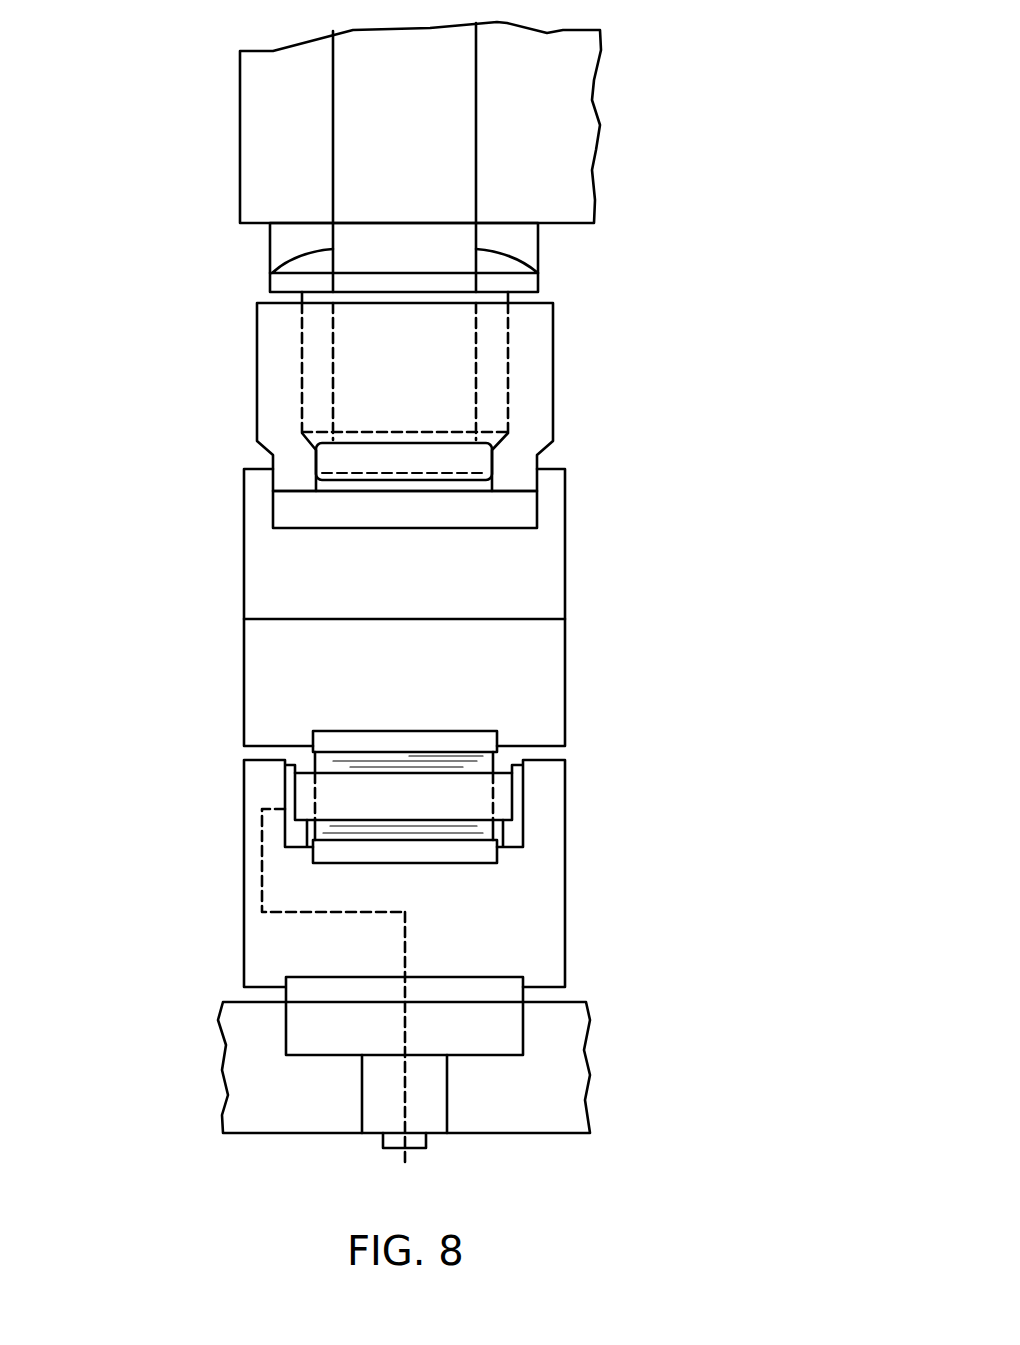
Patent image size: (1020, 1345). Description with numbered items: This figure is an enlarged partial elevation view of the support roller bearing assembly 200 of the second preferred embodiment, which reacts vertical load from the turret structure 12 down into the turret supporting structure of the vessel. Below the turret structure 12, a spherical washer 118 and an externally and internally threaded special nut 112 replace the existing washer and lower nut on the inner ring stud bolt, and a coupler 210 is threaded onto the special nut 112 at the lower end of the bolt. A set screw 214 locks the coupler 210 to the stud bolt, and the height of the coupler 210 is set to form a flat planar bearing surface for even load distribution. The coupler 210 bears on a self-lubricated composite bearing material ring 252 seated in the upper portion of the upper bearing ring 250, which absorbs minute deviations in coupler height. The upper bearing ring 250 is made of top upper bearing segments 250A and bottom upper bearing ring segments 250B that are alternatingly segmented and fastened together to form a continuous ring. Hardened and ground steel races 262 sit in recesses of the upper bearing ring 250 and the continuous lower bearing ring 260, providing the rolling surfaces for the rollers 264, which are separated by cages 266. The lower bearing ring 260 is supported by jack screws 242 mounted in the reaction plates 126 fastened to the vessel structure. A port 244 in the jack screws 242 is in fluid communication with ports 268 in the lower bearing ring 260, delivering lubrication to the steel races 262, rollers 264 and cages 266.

The turret structure 12 is at (563, 174).
The spherical washer 118 is at (528, 251).
The coupler 210 is at (535, 342).
The special nut 112 is at (490, 387).
The set screw 214 is at (480, 461).
The bearing material ring 252 is at (517, 510).
The upper bearing ring 250 is at (394, 607).
The top upper bearing segments 250A is at (267, 563).
The bottom upper bearing ring segments 250B is at (263, 683).
The steel races 262 is at (450, 742).
The rollers 264 is at (325, 763).
The cages 266 is at (505, 794).
The ports 268 is at (262, 883).
The lower bearing ring 260 is at (542, 932).
The support roller bearing assembly 200 is at (219, 797).
The jack screws 242 is at (507, 1029).
The port 244 is at (402, 1077).
The reaction plates 126 is at (562, 1097).